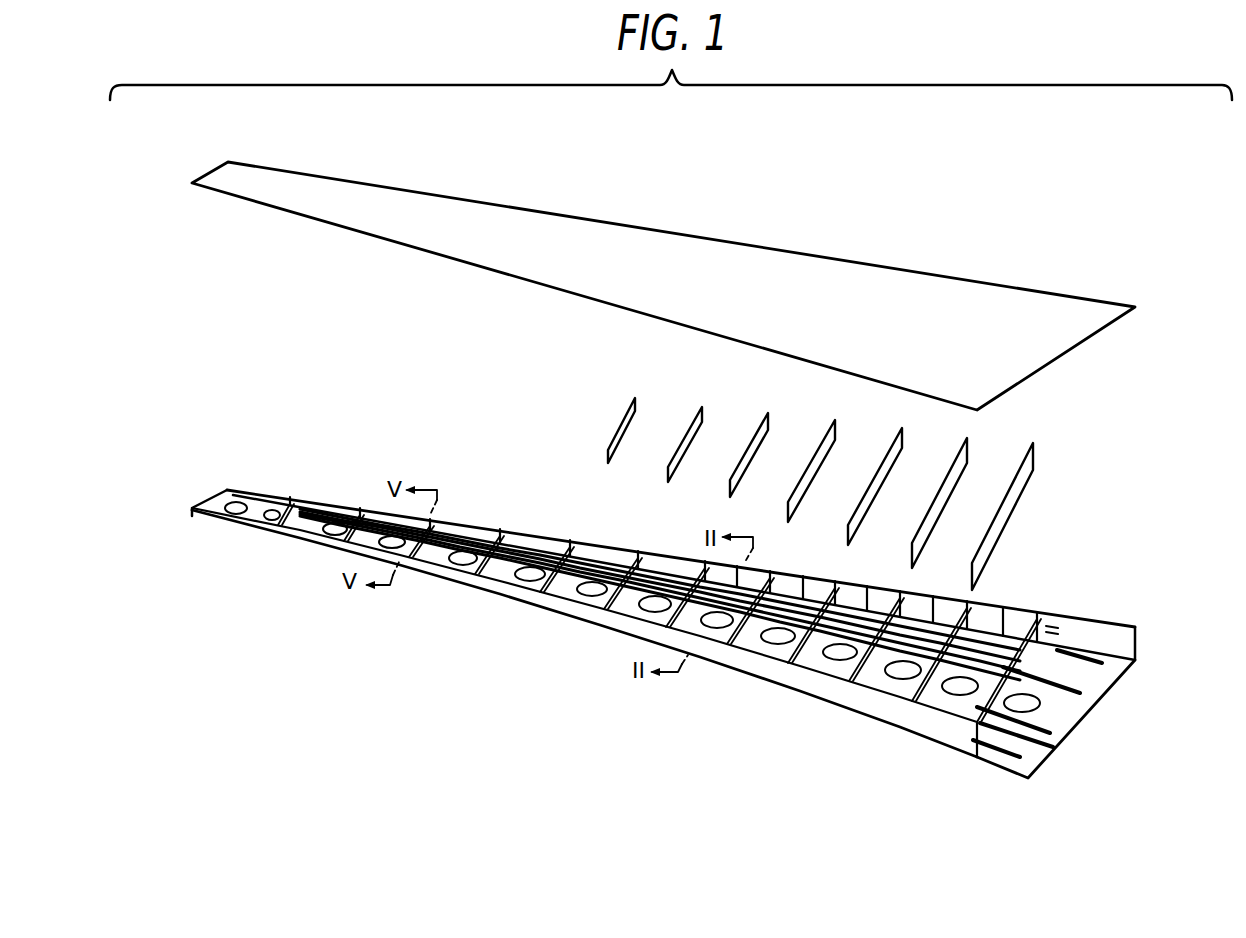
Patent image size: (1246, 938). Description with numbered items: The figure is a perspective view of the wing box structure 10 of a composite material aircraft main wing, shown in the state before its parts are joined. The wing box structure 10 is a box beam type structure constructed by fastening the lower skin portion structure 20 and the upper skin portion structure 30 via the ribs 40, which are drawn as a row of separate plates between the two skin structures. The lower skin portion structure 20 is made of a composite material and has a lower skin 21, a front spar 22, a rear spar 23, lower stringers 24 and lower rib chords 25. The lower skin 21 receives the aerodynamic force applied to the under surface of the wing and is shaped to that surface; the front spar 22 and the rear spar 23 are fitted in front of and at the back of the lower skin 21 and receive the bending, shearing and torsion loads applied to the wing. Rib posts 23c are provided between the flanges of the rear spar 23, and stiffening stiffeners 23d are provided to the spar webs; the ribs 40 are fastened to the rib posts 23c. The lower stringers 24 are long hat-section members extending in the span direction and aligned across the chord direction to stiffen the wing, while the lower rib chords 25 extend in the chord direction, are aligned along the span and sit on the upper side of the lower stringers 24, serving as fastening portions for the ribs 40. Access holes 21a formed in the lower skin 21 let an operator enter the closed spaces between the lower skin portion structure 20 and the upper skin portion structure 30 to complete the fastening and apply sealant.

The wing box structure 10 is at (172, 148).
The lower skin portion structure 20 is at (698, 683).
The lower skin 21 is at (1065, 715).
The access holes 21a is at (837, 655).
The front spar 22 is at (882, 706).
The rear spar 23 is at (1120, 643).
The rib posts 23c is at (908, 600).
The stiffening stiffeners 23d is at (1013, 603).
The lower stringers 24 is at (1097, 668).
The lower rib chords 25 is at (1043, 632).
The upper skin portion structure 30 is at (1020, 298).
The ribs 40 is at (1047, 447).